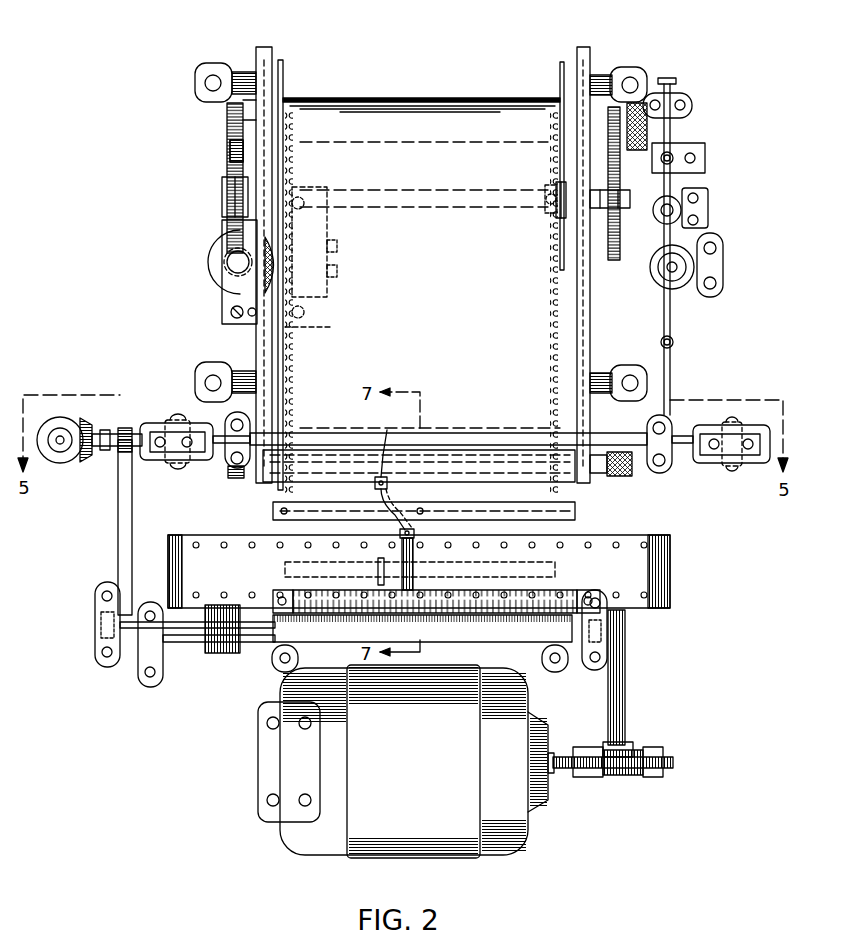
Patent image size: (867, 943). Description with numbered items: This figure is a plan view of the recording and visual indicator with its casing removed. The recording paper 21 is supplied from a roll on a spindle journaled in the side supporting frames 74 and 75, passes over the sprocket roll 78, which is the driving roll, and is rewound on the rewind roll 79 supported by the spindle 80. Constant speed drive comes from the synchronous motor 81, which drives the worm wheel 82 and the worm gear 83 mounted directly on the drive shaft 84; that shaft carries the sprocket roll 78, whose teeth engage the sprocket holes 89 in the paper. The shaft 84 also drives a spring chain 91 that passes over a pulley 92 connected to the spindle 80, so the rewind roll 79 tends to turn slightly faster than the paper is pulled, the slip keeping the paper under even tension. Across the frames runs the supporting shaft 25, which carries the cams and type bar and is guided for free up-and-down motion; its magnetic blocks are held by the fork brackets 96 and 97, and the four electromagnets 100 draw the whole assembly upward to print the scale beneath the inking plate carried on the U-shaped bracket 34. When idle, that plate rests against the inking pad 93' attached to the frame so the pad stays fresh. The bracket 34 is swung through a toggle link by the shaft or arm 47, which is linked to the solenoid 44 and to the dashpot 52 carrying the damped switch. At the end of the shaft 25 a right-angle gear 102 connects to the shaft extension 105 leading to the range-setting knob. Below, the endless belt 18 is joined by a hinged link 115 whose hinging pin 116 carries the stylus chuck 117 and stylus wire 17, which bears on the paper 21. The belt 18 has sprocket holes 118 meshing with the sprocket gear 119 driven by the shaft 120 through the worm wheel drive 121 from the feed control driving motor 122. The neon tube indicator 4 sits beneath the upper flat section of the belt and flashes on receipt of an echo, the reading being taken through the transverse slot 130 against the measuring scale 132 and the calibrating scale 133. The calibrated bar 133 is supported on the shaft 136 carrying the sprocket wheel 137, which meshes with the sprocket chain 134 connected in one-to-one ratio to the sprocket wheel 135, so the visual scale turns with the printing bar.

The neon tube indicator 4 is at (558, 570).
The stylus wire 17 is at (385, 440).
The endless belt 18 is at (672, 577).
The recording paper 21 is at (304, 116).
The supporting shaft 25 is at (228, 462).
The U-shaped bracket 34 is at (338, 434).
The solenoid 44 is at (662, 282).
The shaft or arm 47 is at (686, 322).
The dashpot 52 is at (655, 218).
The side supporting frame 74 is at (258, 336).
The side supporting frame 75 is at (588, 322).
The sprocket roll 78 is at (546, 192).
The rewind roll 79 is at (281, 62).
The spindle 80 is at (562, 72).
The synchronous motor 81 is at (208, 268).
The worm wheel 82 is at (225, 252).
The worm gear 83 is at (227, 163).
The drive shaft 84 is at (568, 215).
The sprocket holes 89 is at (548, 356).
The spring chain 91 is at (612, 250).
The pulley 92 is at (620, 147).
The inking pad 93' is at (447, 506).
The fork bracket 96 is at (172, 420).
The fork bracket 97 is at (731, 424).
The electromagnet 100 is at (200, 424).
The gear 102 is at (88, 462).
The shaft extension 105 is at (60, 436).
The hinged link 115 is at (415, 560).
The hinging pin 116 is at (375, 486).
The stylus chuck 117 is at (390, 486).
The sprocket holes 118 is at (222, 596).
The sprocket gear 119 is at (672, 600).
The shaft 120 is at (626, 692).
The worm wheel drive 121 is at (607, 778).
The feed control driving motor 122 is at (285, 830).
The transverse slot 130 is at (377, 570).
The measuring scale 132 is at (280, 594).
The calibrating scale 133 is at (470, 630).
The sprocket chain 134 is at (118, 526).
The sprocket wheel 135 is at (124, 428).
The shaft 136 is at (262, 640).
The sprocket wheel 137 is at (123, 662).